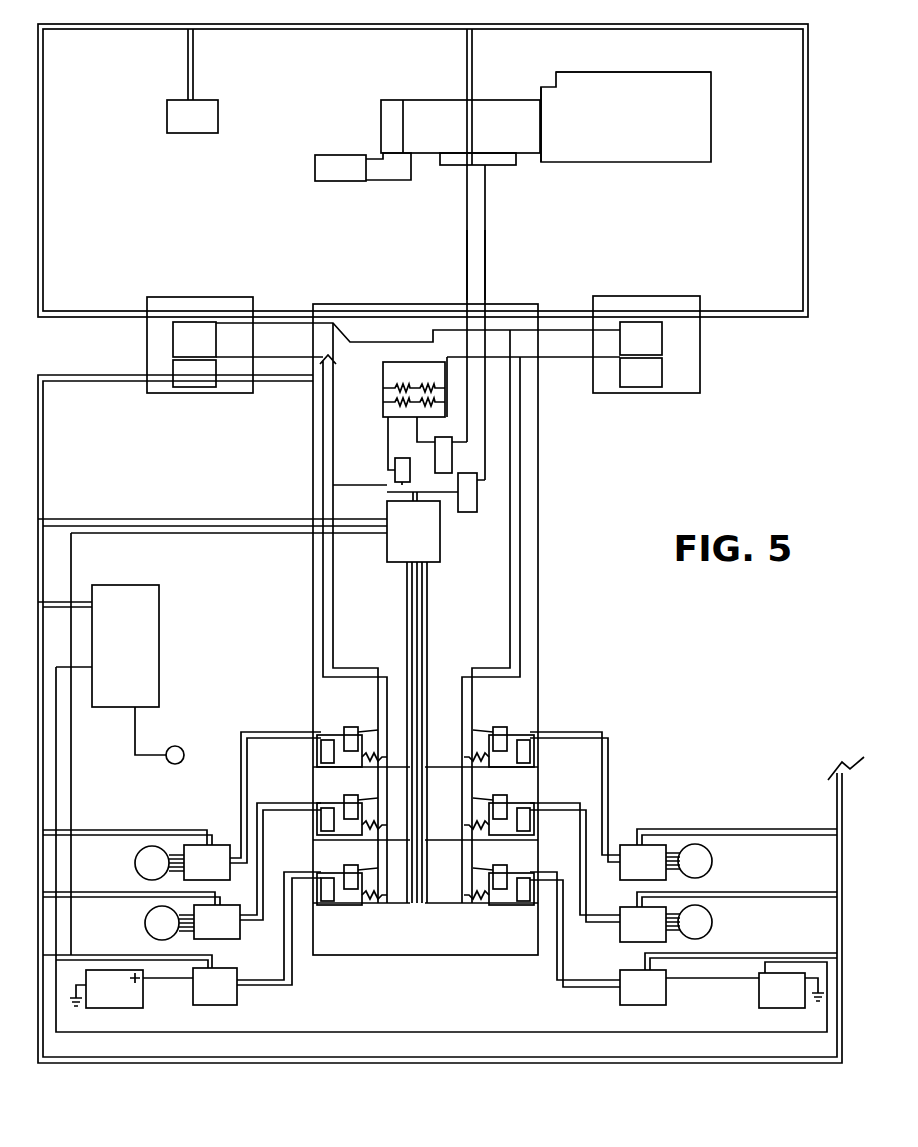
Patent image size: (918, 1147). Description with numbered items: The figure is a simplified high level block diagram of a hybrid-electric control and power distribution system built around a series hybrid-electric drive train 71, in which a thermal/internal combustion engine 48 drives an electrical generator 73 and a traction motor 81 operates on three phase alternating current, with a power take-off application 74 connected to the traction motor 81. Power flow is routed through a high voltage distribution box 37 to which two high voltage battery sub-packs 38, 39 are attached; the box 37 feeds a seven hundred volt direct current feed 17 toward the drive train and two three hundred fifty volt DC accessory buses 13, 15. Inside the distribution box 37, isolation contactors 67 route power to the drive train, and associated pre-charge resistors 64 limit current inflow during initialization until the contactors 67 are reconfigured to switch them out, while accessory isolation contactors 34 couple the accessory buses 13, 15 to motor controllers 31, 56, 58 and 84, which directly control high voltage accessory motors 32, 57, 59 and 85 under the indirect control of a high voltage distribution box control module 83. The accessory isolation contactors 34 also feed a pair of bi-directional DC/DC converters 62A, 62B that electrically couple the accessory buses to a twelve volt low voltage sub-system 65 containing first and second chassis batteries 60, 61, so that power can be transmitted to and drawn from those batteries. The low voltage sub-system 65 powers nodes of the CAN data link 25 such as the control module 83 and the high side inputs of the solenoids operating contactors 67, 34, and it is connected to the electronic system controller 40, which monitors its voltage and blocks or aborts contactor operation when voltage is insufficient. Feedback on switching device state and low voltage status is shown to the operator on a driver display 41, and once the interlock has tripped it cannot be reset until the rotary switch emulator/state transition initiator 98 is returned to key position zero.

The CAN data link 25 is at (73, 375).
The driver display 41 is at (172, 125).
The traction motor 81 is at (427, 100).
The power take-off (PTO) application 74 is at (352, 180).
The thermal/internal combustion engine 48 is at (635, 138).
The electrical generator 73 is at (530, 148).
The 700 volt direct current feed 17 is at (483, 235).
The series hybrid-electric drive train 71 is at (580, 211).
The high voltage battery sub-pack 38 is at (160, 300).
The high voltage battery sub-pack 39 is at (683, 300).
The high voltage distribution box 37 is at (540, 538).
The accessory bus 13 is at (330, 590).
The accessory bus 15 is at (515, 610).
The pre-charge resistors 64 is at (393, 390).
The isolation contactors 67 is at (455, 527).
The high voltage distribution box control module 83 is at (398, 556).
The accessory isolation contactors 34 is at (462, 918).
The electronic system controller (ESC) 40 is at (148, 603).
The rotary switch emulator/state transition initiator 98 is at (182, 748).
The motor controller 84 is at (212, 845).
The accessory motor 85 is at (145, 868).
The motor controller 58 is at (232, 932).
The accessory motor 59 is at (153, 930).
The bi-directional DC/DC converter 62A is at (228, 990).
The chassis battery 60 is at (135, 995).
The low voltage sub-system 65 is at (390, 1028).
The motor controller 31 is at (652, 855).
The accessory motor 32 is at (707, 862).
The motor controller 56 is at (622, 937).
The accessory motor 57 is at (707, 927).
The bi-directional DC/DC converter 62B is at (630, 998).
The chassis battery 61 is at (770, 998).